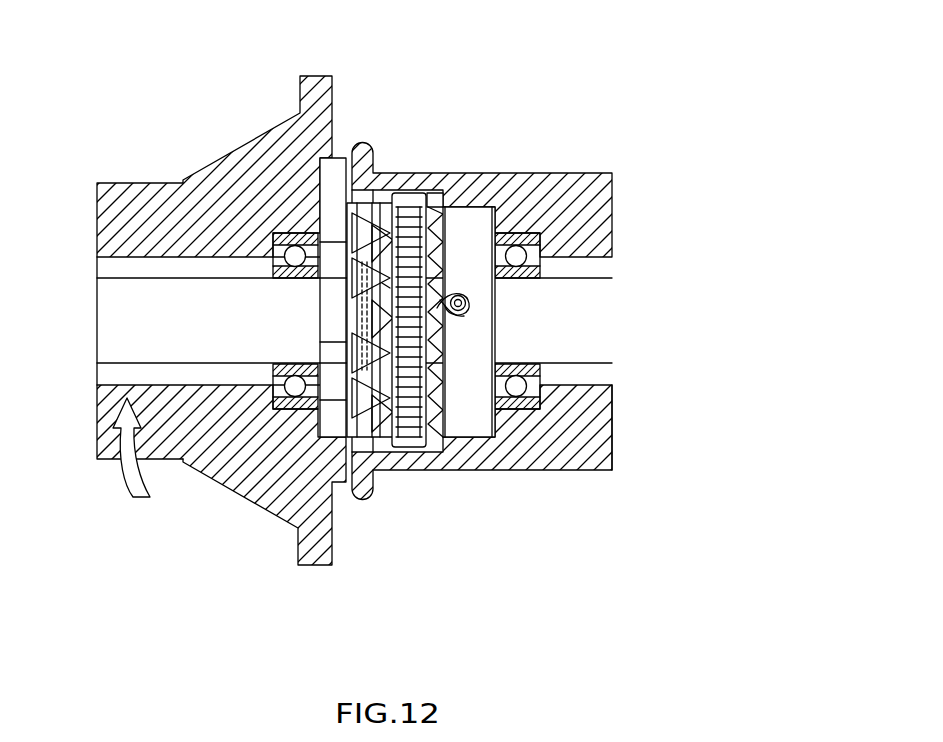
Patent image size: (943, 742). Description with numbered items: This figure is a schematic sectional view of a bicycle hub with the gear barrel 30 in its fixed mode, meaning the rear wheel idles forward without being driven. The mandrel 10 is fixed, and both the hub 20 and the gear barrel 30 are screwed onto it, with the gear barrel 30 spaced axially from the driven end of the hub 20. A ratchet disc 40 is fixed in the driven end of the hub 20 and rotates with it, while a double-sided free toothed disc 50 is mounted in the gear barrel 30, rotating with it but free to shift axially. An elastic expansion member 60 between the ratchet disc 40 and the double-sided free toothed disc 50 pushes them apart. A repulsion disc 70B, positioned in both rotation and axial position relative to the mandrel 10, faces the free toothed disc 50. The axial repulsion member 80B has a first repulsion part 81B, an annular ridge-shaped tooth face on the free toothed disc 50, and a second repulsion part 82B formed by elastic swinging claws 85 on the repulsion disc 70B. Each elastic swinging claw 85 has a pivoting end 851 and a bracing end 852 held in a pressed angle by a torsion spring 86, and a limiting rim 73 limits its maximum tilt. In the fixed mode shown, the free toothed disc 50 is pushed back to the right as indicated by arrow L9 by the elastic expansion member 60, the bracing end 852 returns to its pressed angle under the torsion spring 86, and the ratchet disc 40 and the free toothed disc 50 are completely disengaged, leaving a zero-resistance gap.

The mandrel 10 is at (604, 352).
The hub 20 is at (128, 180).
The gear barrel 30 is at (607, 428).
The ratchet disc 40 is at (332, 216).
The double-sided free toothed disc 50 is at (408, 428).
The elastic expansion member 60 is at (375, 180).
The repulsion disc 70B is at (484, 390).
The limiting rim 73 is at (472, 322).
The axial repulsion member 80B is at (474, 250).
The first repulsion part 81B is at (465, 207).
The second repulsion part 82B is at (495, 207).
The elastic swinging claw 85 is at (456, 333).
The pivoting end 851 is at (462, 303).
The bracing end 852 is at (450, 307).
The torsion spring 86 is at (467, 287).
The arrow L9 is at (385, 285).